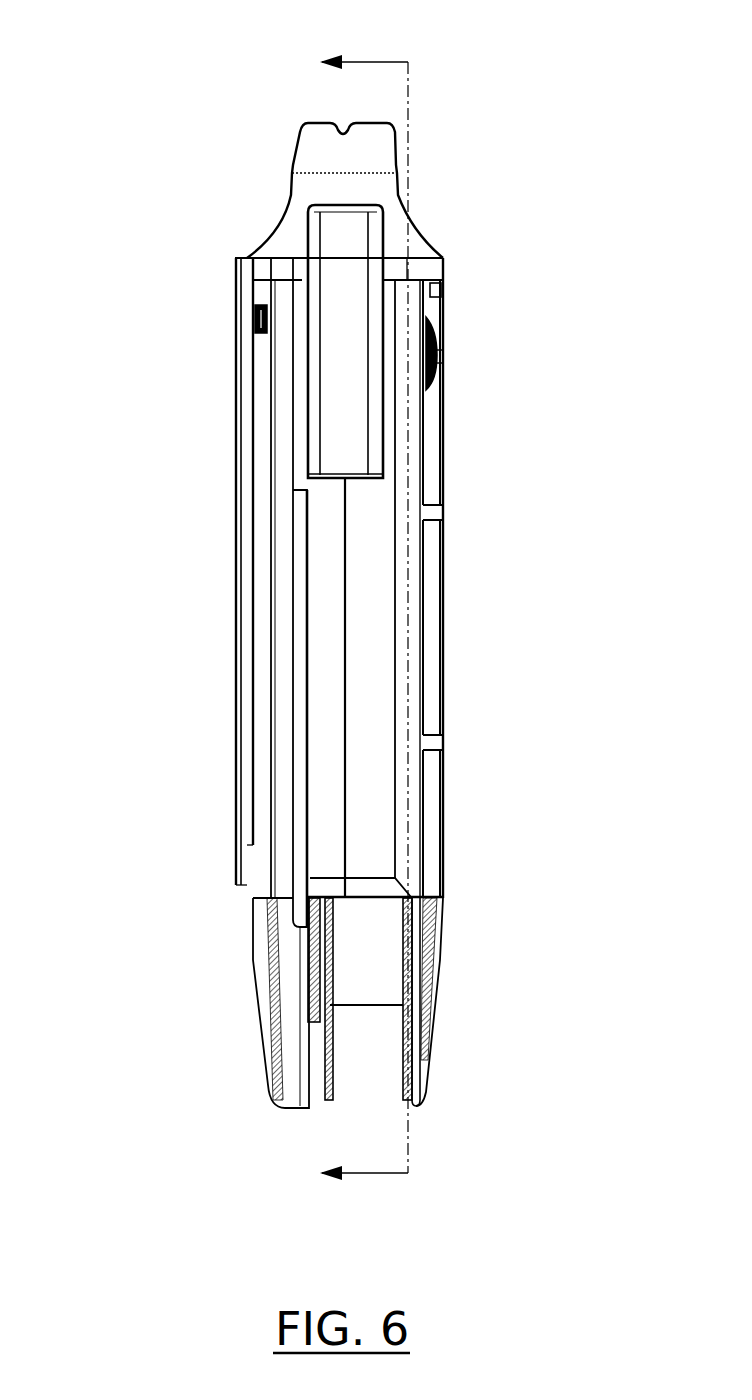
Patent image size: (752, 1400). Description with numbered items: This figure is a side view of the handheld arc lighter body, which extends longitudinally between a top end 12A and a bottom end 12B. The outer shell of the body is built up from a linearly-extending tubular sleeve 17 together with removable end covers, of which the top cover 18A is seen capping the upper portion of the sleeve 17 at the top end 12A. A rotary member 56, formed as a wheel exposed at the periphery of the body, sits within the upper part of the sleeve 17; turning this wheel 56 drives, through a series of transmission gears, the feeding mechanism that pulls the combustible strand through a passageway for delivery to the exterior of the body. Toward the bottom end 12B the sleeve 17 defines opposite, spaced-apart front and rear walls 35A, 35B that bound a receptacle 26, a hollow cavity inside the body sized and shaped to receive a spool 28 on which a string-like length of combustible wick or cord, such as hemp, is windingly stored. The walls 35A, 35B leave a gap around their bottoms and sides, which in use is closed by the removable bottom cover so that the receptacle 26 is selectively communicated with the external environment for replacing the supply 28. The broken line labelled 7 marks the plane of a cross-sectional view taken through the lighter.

The section line 7- 7 is at (368, 622).
The top end 12A is at (318, 110).
The bottom end 12B is at (419, 1122).
The tubular sleeve 17 is at (250, 943).
The top cover 18A is at (293, 202).
The receptacle 26 is at (364, 1118).
The spool 28 is at (382, 972).
The front wall 35A is at (292, 1110).
The rear wall 35B is at (423, 1068).
The rotary wheel 56 is at (307, 225).